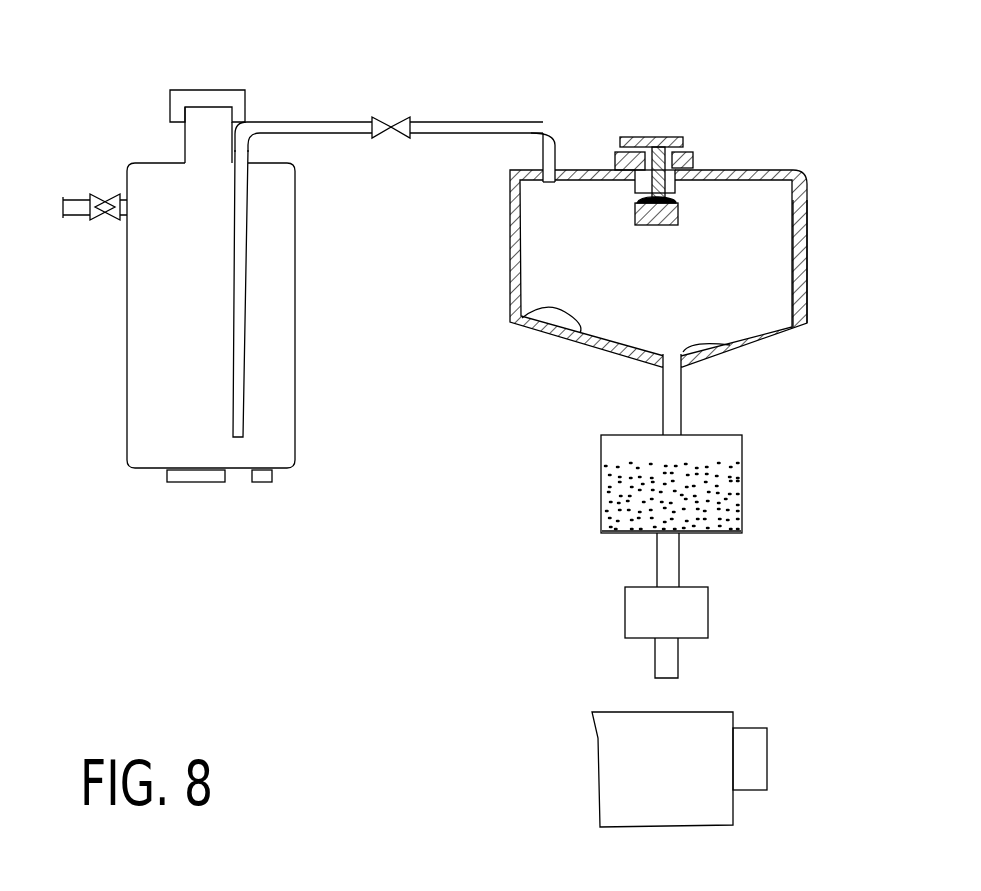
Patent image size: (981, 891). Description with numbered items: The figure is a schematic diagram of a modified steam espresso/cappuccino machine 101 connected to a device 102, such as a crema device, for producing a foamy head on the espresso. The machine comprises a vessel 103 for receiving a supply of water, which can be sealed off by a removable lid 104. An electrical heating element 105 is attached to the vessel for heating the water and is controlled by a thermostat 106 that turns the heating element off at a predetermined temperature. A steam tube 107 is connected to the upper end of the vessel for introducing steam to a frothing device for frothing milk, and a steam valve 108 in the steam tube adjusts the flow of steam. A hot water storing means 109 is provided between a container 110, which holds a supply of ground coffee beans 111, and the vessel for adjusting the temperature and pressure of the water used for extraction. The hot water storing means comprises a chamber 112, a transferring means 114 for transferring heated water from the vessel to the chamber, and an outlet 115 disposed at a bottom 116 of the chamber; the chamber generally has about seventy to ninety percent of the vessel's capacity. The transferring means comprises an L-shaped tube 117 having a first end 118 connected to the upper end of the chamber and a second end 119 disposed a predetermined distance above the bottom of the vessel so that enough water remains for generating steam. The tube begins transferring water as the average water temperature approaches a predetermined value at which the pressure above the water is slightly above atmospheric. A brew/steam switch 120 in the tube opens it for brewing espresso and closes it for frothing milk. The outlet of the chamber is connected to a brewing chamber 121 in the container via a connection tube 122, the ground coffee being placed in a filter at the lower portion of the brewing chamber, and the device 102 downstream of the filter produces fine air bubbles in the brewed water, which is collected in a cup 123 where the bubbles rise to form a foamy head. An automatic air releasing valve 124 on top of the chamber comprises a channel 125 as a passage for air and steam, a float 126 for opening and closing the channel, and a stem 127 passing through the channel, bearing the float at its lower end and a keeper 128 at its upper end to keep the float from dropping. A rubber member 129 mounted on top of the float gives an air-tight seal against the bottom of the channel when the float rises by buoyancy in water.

The steam espresso/cappuccino machine 101 is at (133, 133).
The device 102 is at (710, 625).
The vessel 103 is at (121, 312).
The removable lid 104 is at (247, 90).
The electrical heating element 105 is at (197, 485).
The thermostat 106 is at (263, 485).
The steam tube 107 is at (122, 217).
The steam valve 108 is at (112, 195).
The hot water storing means 109 is at (806, 158).
The container 110 is at (752, 500).
The ground coffee beans 111 is at (730, 527).
The chamber 112 is at (808, 312).
The transferring means 114 is at (518, 104).
The outlet 115 is at (697, 360).
The bottom 116 is at (512, 320).
The L-shaped tube 117 is at (342, 120).
The first end 118 is at (545, 182).
The second end 119 is at (233, 385).
The brew/steam switch 120 is at (396, 116).
The brewing chamber 121 is at (713, 452).
The connection tube 122 is at (683, 413).
The cup 123 is at (776, 766).
The automatic air releasing valve 124 is at (706, 158).
The channel 125 is at (693, 150).
The float 126 is at (680, 225).
The stem 127 is at (640, 137).
The keeper 128 is at (657, 150).
The rubber member 129 is at (680, 200).